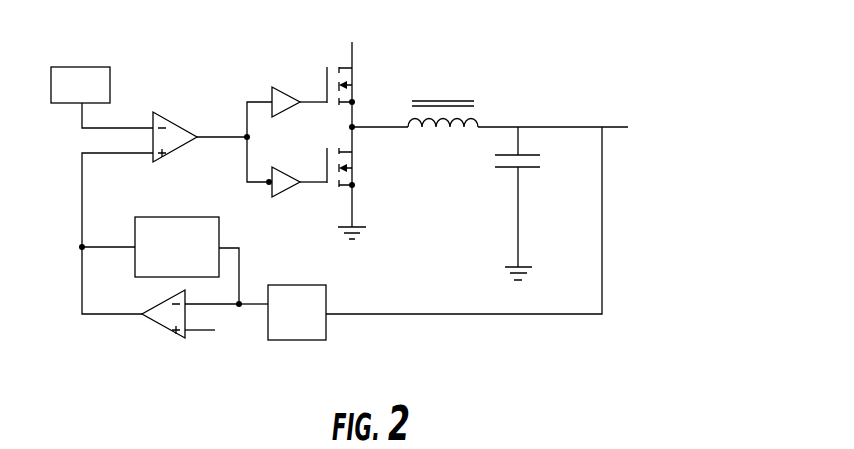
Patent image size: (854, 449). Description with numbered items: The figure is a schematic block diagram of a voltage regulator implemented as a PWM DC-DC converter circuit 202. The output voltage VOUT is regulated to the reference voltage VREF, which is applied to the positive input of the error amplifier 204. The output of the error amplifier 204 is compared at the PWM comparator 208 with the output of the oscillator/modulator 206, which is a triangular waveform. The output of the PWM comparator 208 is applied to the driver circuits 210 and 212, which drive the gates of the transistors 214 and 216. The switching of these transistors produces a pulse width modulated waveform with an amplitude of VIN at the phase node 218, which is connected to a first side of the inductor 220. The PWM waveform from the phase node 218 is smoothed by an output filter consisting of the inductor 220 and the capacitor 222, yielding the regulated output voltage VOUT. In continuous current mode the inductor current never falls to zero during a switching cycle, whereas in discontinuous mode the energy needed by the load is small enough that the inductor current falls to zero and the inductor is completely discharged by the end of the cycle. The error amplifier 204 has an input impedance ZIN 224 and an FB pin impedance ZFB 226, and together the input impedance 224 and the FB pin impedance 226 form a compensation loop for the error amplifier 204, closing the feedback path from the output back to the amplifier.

The PWM DC-DC converter circuit 202 is at (566, 70).
The error amplifier 204 is at (160, 326).
The oscillator/modulator 206 is at (84, 67).
The PWM comparator 208 is at (173, 118).
The driver circuit 210 is at (292, 95).
The driver circuit 212 is at (285, 171).
The transistor 214 is at (368, 80).
The transistor 216 is at (364, 168).
The phase node 218 is at (355, 130).
The inductor 220 is at (478, 110).
The capacitor 222 is at (540, 160).
The input impedance ZIN 224 is at (320, 340).
The FB pin impedance ZFB 226 is at (219, 222).